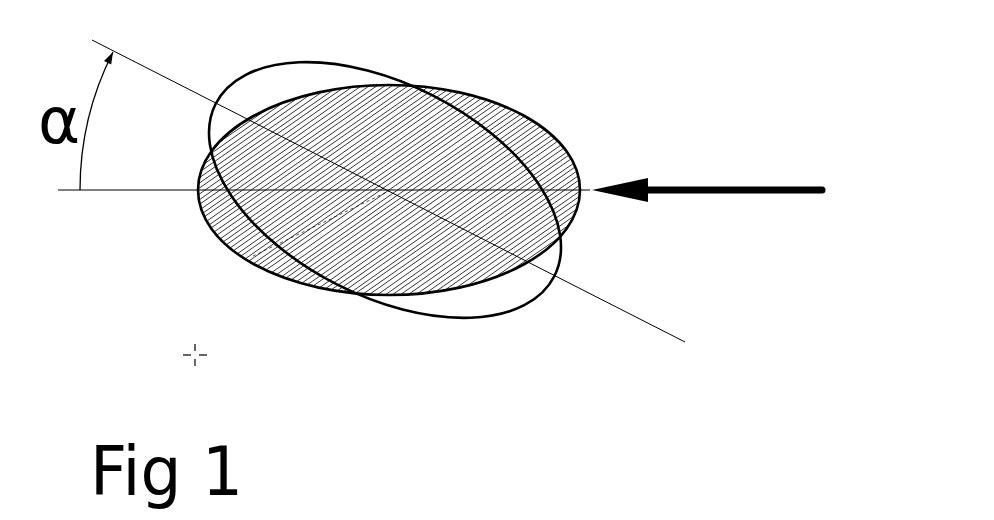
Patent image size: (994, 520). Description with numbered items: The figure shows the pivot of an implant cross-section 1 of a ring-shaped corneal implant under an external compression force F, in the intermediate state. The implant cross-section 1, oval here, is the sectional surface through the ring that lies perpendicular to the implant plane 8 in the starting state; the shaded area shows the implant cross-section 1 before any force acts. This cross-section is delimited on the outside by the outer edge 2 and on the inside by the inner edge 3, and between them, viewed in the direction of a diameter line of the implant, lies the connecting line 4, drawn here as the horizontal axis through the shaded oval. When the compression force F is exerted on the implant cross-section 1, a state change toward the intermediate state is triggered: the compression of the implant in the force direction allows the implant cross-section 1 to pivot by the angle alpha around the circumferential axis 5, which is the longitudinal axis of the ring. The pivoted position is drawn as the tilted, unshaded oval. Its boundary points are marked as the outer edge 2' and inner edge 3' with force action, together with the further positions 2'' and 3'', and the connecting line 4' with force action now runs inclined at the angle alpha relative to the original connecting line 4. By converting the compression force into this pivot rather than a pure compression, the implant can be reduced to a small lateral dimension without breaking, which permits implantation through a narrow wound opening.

The implant cross-section 1 is at (503, 108).
The outer edge 2 is at (612, 146).
The inner edge 3 is at (160, 160).
The outer edge with force action 2' is at (584, 328).
The outer edge 2'' is at (626, 254).
The inner edge with force action 3' is at (208, 51).
The inner edge 3'' is at (173, 101).
The connecting line 4 is at (324, 236).
The connecting line with force action 4' is at (406, 204).
The circumferential axis 5 is at (252, 256).
The implant plane 8 is at (737, 197).